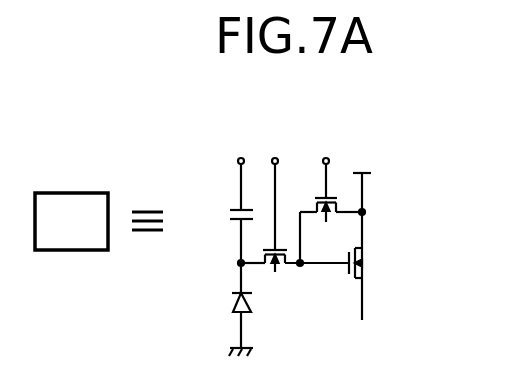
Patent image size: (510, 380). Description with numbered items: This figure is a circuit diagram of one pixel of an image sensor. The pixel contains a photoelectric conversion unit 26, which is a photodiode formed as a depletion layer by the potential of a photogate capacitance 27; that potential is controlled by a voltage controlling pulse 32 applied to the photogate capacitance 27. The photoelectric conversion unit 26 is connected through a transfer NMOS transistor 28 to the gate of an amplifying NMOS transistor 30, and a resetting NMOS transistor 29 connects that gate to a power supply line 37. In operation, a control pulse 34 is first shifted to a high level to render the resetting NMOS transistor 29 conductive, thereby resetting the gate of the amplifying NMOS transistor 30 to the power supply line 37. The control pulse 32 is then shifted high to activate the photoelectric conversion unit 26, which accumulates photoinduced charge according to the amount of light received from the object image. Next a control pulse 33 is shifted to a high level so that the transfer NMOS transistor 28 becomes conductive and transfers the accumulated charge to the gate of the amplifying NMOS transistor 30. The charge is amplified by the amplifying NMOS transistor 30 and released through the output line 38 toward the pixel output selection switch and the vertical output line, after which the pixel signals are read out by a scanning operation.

The photoelectric conversion unit 26 is at (232, 303).
The photogate capacitance 27 is at (225, 212).
The transfer NMOS transistor 28 is at (285, 266).
The resetting NMOS transistor 29 is at (332, 197).
The amplifying NMOS transistor 30 is at (366, 260).
The control pulse 32 is at (236, 158).
The control pulse 33 is at (274, 156).
The control pulse 34 is at (325, 156).
The power supply line 37 is at (365, 188).
The output line 38 is at (366, 298).